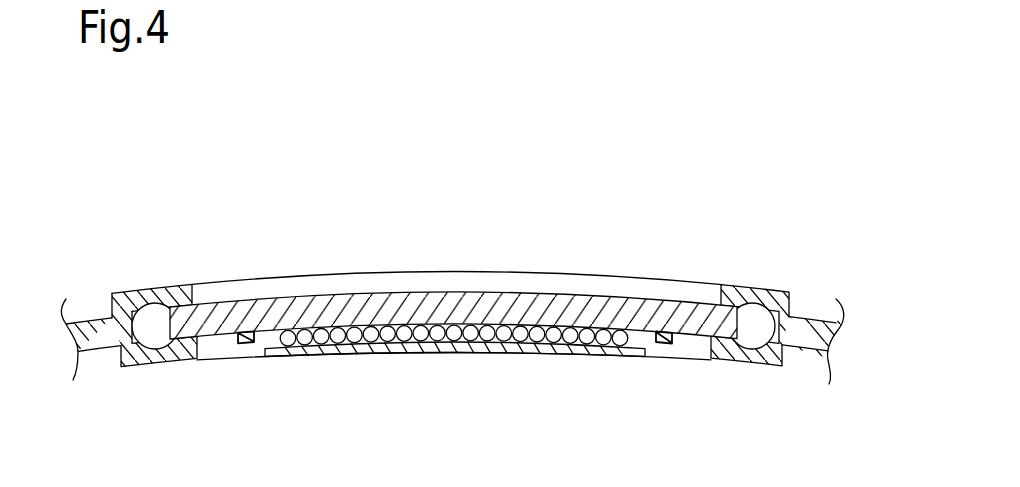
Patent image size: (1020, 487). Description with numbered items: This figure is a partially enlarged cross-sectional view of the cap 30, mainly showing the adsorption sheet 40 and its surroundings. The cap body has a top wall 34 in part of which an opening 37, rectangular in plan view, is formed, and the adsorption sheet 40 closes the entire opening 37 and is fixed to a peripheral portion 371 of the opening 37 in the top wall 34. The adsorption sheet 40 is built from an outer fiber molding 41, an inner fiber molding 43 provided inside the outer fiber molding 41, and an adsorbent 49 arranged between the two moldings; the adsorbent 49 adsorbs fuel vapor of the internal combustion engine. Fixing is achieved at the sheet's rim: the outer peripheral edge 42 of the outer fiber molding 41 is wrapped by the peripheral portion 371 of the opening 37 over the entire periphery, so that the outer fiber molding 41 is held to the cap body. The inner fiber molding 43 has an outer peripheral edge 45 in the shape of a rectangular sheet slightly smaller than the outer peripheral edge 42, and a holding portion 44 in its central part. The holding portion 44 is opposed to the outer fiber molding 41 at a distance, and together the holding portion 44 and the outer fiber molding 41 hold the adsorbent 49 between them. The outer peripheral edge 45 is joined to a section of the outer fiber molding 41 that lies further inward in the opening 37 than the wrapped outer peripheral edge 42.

The display device 30 is at (665, 198).
The adsorption sheet 40 is at (523, 273).
The outer fiber molding 41 is at (458, 292).
The outer peripheral edge 42 is at (156, 292).
The inner fiber molding 43 is at (509, 354).
The holding portion 44 is at (446, 353).
The outer peripheral edge 45 is at (255, 343).
The adsorbent 49 is at (337, 346).
The opening 37 is at (198, 348).
The peripheral portion 371 is at (175, 285).
The top wall 34 is at (812, 319).